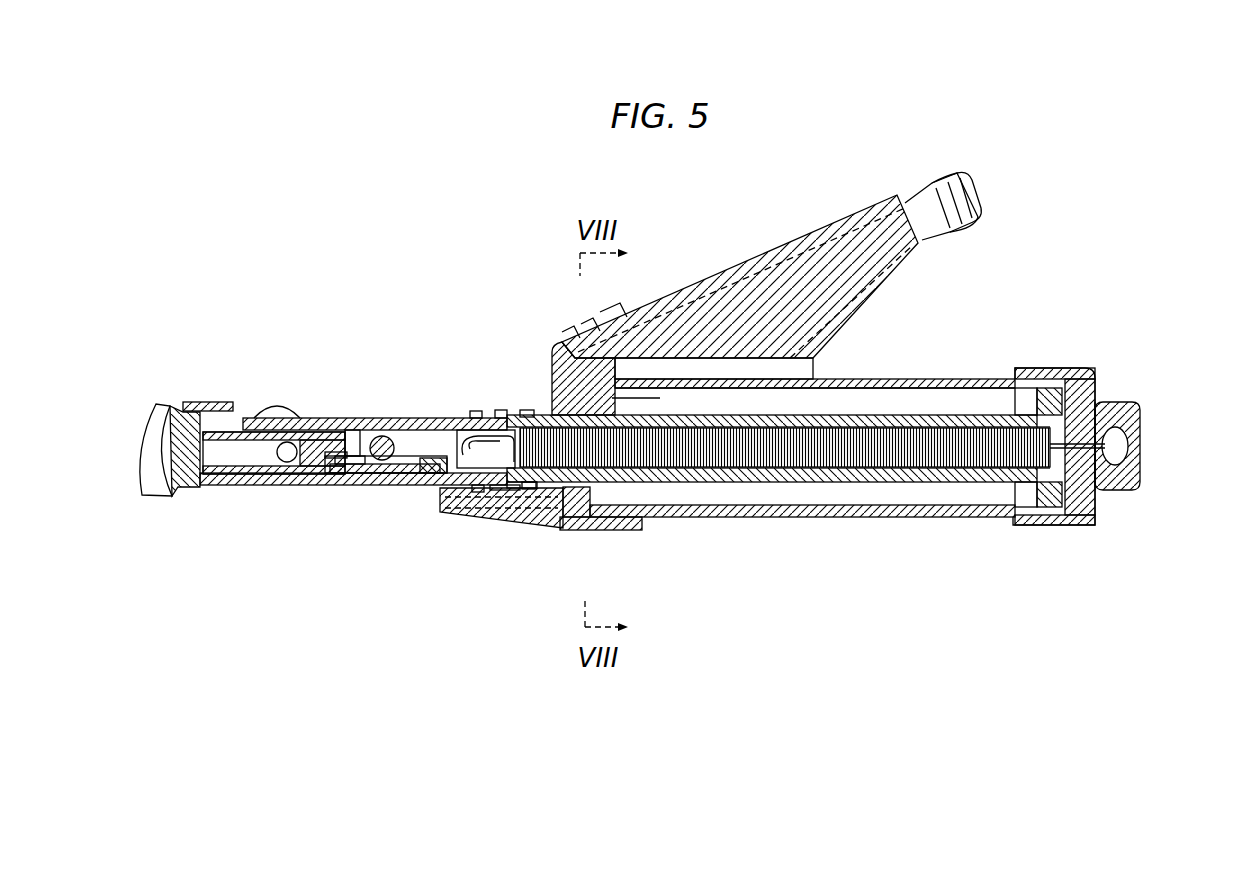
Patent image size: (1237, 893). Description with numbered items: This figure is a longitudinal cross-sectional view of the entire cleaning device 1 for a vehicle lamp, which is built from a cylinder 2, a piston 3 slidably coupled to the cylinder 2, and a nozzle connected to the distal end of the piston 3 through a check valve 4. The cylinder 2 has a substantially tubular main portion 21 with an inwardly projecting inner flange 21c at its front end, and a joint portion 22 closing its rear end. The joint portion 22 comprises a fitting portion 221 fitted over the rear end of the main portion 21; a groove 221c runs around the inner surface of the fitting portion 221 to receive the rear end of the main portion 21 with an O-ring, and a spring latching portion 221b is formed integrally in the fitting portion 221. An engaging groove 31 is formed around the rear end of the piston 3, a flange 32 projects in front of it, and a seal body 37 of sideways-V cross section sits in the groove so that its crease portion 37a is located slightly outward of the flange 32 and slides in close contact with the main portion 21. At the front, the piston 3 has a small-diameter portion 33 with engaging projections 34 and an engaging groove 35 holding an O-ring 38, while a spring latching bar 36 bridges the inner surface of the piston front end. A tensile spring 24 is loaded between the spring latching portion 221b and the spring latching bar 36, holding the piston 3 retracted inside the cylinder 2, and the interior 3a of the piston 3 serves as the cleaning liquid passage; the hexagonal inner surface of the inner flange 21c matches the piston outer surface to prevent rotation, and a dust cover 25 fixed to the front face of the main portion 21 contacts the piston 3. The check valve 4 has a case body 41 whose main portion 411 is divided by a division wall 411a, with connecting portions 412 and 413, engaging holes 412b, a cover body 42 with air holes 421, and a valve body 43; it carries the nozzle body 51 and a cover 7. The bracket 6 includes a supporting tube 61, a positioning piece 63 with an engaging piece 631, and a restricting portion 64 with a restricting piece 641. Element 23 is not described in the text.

The cleaning device 1 is at (660, 406).
The cylinder 2 is at (871, 443).
The main portion 21 is at (750, 518).
The inner flange 21c is at (612, 396).
The joint portion 22 is at (1059, 448).
The fitting portion 221 is at (1012, 370).
The spring latching portion 221b is at (1138, 442).
The groove 221c is at (1058, 382).
The retaining ring 23 is at (1078, 377).
The tensile spring 24 is at (820, 517).
The dust cover 25 is at (560, 347).
The piston 3 is at (806, 452).
The interior 3a is at (936, 440).
The engaging groove 31 is at (1097, 378).
The flange 32 is at (1020, 495).
The small-diameter portion 33 is at (488, 463).
The engaging projections 34 is at (517, 492).
The engaging groove 35 is at (504, 528).
The spring latching bar 36 is at (428, 487).
The seal body 37 is at (1040, 527).
The crease portion 37a is at (1080, 527).
The O-ring 38 is at (505, 418).
The check valve 4 is at (368, 475).
The case body 41 is at (380, 418).
The main portion 411 is at (412, 418).
The division wall 411a is at (392, 487).
The connecting portion 412 is at (480, 418).
The engaging holes 412b is at (514, 492).
The connecting portion 413 is at (316, 418).
The cover body 42 is at (372, 487).
The air holes 421 is at (349, 487).
The valve body 43 is at (342, 487).
The nozzle body 51 is at (272, 416).
The bracket 6 is at (809, 258).
The supporting tube 61 is at (632, 532).
The positioning piece 63 is at (747, 256).
The engaging piece 631 is at (957, 204).
The restricting portion 64 is at (500, 547).
The restricting piece 641 is at (460, 530).
The cover 7 is at (157, 413).